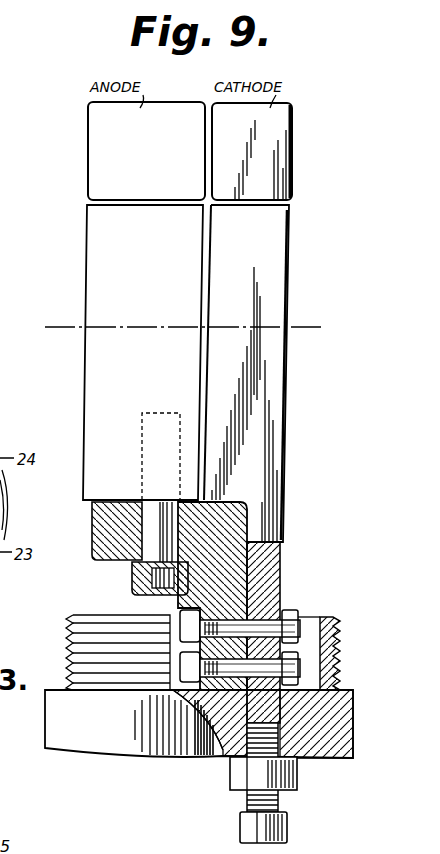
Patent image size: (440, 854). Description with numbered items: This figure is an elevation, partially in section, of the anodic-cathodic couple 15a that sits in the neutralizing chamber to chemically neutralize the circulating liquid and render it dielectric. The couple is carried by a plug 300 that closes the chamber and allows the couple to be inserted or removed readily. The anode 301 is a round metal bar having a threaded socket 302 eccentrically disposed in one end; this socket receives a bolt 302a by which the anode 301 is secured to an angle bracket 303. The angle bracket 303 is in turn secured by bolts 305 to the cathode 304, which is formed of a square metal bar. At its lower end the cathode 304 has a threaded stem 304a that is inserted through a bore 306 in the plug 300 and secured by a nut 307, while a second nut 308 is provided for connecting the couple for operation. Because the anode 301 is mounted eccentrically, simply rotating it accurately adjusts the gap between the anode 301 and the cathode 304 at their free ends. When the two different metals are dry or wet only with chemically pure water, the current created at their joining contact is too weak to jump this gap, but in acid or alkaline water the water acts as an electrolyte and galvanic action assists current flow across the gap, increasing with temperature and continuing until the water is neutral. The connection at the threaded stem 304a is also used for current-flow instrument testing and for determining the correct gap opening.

The anode 301 is at (97, 277).
The threaded socket 302 is at (156, 446).
The bolt 302a is at (132, 585).
The angle bracket 303 is at (110, 553).
The cathode 304 is at (277, 264).
The threaded stem 304a is at (278, 807).
The bolts 305 is at (260, 667).
The bore 306 is at (197, 757).
The nut 307 is at (297, 775).
The second nut 308 is at (243, 822).
The plug 300 is at (62, 734).
The anodic-cathodic couple 15a is at (286, 487).